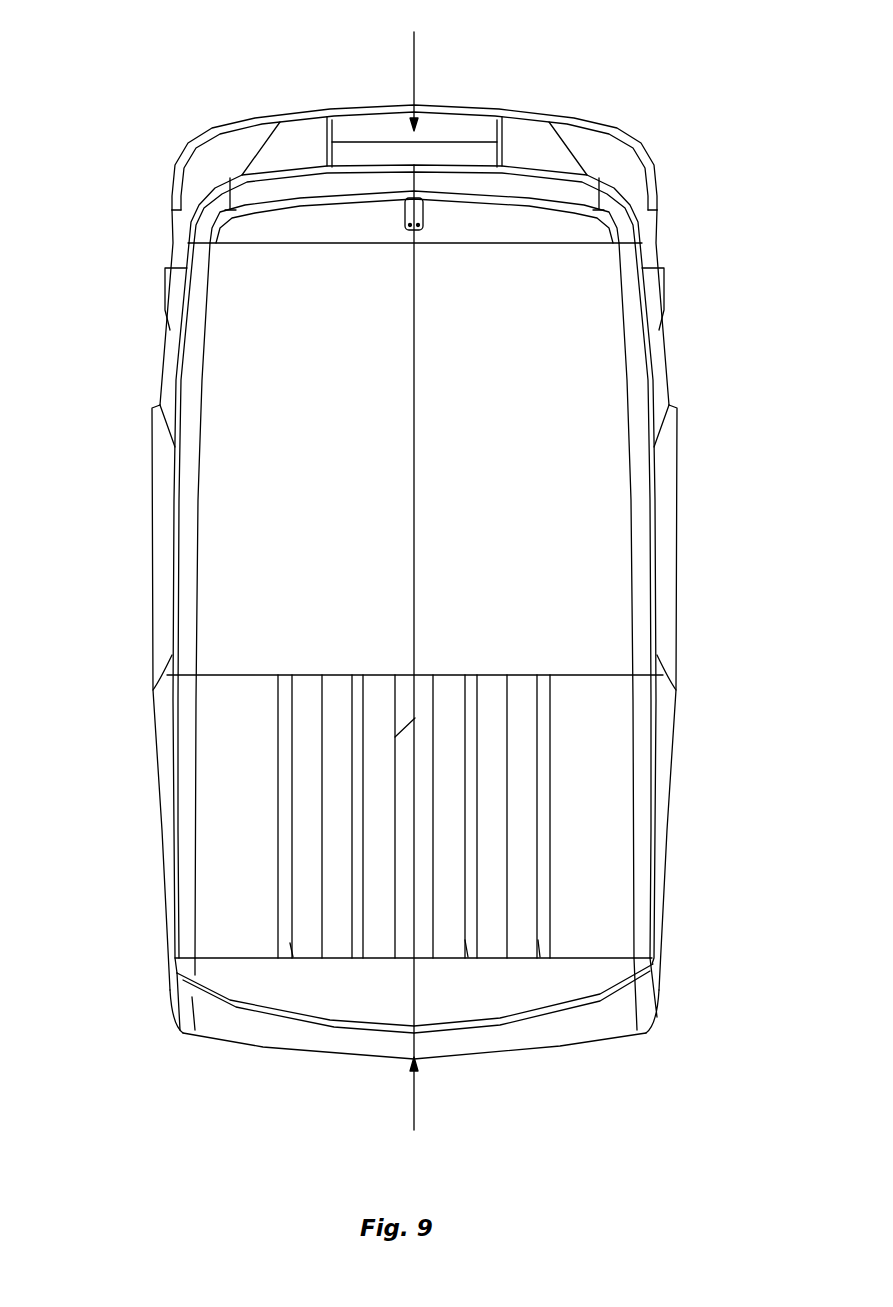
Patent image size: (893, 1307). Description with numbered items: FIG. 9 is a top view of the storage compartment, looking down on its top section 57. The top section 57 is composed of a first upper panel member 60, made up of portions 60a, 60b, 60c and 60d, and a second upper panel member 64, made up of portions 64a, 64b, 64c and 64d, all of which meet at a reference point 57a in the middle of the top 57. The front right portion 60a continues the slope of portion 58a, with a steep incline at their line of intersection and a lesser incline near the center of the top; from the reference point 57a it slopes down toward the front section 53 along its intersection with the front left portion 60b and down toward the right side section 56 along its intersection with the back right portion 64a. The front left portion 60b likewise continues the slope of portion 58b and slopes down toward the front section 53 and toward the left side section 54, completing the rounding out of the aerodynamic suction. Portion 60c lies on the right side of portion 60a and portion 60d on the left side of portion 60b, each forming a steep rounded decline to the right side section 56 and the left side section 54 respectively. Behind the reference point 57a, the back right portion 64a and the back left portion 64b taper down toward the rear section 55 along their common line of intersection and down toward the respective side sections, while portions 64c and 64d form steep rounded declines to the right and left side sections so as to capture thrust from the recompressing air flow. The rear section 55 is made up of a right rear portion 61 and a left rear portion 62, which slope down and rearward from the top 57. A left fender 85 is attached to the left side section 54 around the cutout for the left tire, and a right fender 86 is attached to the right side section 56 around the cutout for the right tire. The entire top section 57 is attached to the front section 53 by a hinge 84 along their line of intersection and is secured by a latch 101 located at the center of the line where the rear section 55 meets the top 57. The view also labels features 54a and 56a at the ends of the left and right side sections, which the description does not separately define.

The front section 53 is at (414, 661).
The left side section 54 is at (658, 551).
The right side rail rear end 54a is at (650, 1003).
The rear section 55 is at (414, 73).
The right side section 56 is at (172, 556).
The left side rail rear end 56a is at (182, 1013).
The top section 57 is at (118, 670).
The reference point 57a is at (418, 674).
The portion 58a is at (315, 1040).
The portion 58b is at (495, 1037).
The first upper panel member 60 is at (612, 727).
The front right portion 60a is at (251, 810).
The front left portion 60b is at (598, 810).
The portion 60c is at (187, 865).
The portion 60d is at (645, 862).
The right rear portion 61 is at (298, 140).
The left rear portion 62 is at (530, 133).
The second upper panel member 64 is at (588, 416).
The back right portion 64a is at (318, 495).
The back left portion 64b is at (200, 352).
The portion 64c is at (538, 495).
The portion 64d is at (626, 350).
The hinge 84 is at (238, 1017).
The left fender 85 is at (667, 480).
The right fender 86 is at (158, 488).
The latch 101 is at (424, 214).